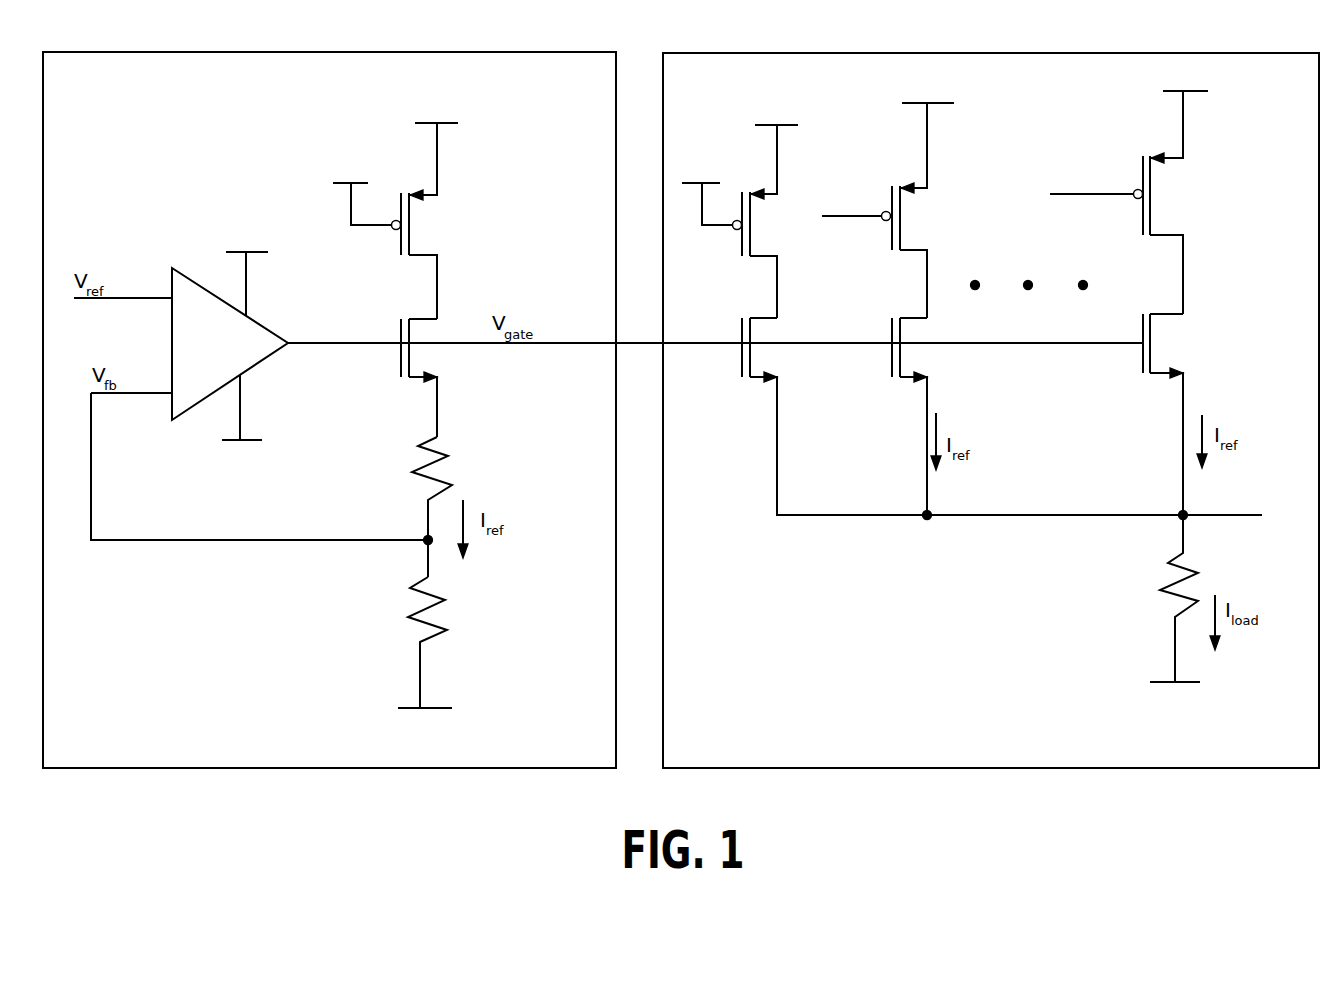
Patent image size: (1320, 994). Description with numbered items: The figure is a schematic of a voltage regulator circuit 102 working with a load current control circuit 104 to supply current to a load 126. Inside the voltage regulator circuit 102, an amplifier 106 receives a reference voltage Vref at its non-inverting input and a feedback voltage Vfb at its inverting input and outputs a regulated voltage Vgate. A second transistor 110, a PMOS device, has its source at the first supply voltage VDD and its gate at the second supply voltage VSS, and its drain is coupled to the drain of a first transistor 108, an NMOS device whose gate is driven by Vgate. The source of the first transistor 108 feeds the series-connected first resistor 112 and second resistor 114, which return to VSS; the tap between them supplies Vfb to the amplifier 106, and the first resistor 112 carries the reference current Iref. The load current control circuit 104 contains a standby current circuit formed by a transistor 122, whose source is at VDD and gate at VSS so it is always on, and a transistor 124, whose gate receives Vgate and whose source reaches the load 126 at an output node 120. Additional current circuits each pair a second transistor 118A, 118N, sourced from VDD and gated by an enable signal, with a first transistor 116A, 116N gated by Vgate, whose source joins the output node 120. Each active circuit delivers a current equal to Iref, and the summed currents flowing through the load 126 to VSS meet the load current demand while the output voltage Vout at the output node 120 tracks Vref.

The voltage regulator circuit 102 is at (370, 52).
The load current control circuit 104 is at (985, 53).
The amplifier 106 is at (172, 270).
The first transistor 108 is at (418, 316).
The second transistor 110 is at (412, 241).
The first resistor 112 is at (447, 458).
The second resistor 114 is at (433, 620).
The first transistor 116A is at (900, 315).
The first transistor 116N is at (1150, 315).
The second transistor 118A is at (900, 232).
The second transistor 118N is at (1150, 214).
The output node 120 is at (1180, 519).
The transistor 122 is at (702, 232).
The transistor 124 is at (750, 382).
The load 126 is at (1158, 592).